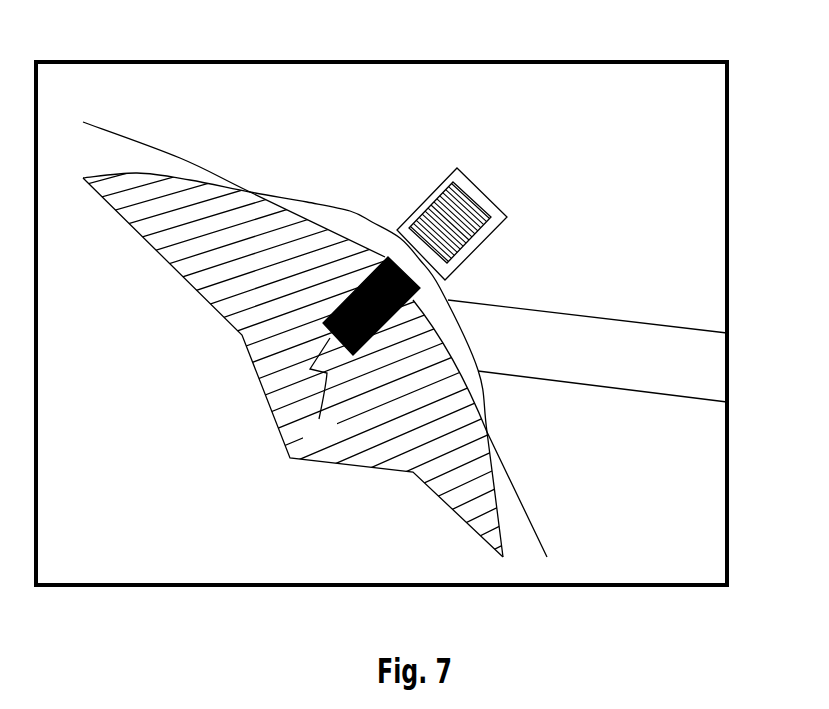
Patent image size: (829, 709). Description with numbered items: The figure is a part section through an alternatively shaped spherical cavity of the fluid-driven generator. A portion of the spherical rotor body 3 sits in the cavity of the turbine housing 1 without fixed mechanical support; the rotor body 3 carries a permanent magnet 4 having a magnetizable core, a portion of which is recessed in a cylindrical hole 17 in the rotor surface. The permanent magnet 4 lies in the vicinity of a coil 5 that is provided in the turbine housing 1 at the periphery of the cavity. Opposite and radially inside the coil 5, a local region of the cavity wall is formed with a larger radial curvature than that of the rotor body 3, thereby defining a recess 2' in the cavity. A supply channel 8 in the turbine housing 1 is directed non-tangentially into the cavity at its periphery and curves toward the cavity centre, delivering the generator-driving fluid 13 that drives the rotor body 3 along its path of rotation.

The turbine housing 1 is at (678, 167).
The recess 2' is at (293, 336).
The rotor body 3 is at (330, 250).
The permanent magnet 4 is at (388, 257).
The coil 5 is at (470, 217).
The supply channel 8 is at (557, 337).
The generator-driving fluid 13 is at (658, 368).
The cylindrical hole 17 is at (320, 391).